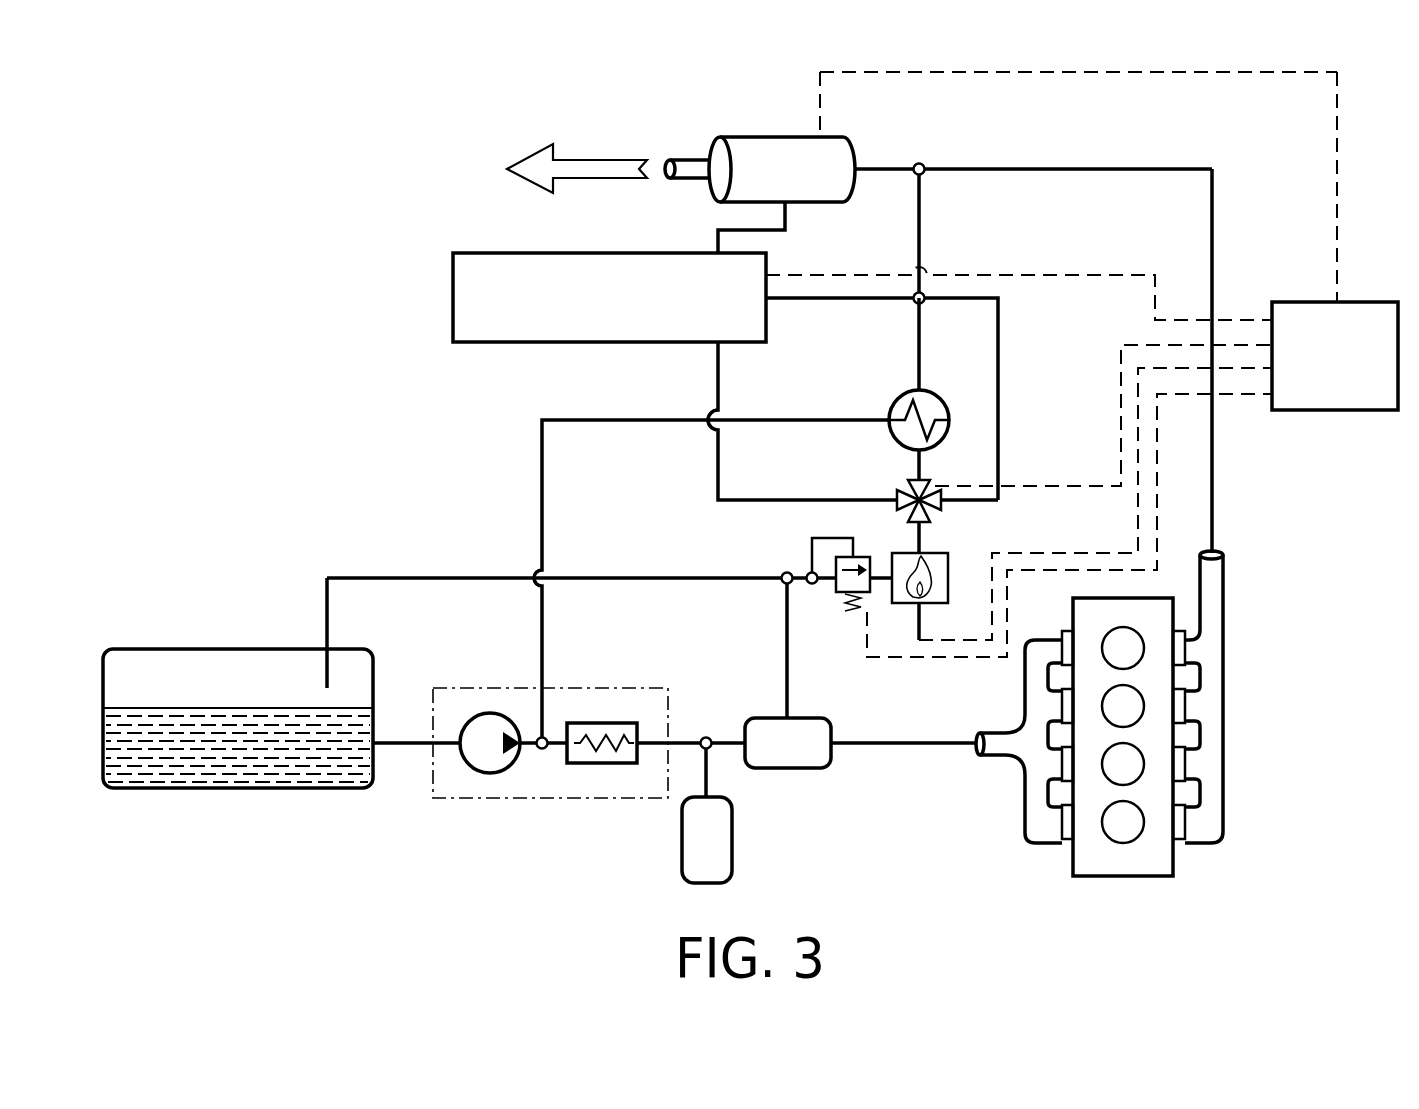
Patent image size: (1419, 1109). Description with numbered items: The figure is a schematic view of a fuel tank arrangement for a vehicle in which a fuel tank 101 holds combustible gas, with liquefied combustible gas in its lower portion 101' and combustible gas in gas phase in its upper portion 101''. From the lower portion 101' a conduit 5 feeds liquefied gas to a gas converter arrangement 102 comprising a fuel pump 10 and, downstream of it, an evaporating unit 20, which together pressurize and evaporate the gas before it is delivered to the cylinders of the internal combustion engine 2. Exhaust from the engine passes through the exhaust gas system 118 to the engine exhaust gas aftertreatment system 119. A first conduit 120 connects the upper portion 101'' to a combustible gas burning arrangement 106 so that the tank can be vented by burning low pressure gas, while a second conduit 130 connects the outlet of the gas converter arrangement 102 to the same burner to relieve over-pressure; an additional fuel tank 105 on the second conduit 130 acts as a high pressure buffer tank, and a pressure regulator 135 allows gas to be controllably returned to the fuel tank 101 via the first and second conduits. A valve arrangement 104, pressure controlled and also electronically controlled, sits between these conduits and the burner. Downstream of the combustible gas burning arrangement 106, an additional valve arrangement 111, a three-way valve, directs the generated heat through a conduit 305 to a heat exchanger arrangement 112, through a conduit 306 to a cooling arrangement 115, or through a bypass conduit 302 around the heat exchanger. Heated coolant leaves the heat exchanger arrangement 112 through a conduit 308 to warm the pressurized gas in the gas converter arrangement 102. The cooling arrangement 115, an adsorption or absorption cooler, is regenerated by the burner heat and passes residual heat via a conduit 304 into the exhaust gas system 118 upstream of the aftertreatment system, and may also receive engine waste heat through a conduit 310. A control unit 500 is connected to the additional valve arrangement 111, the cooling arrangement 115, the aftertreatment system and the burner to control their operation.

The internal combustion engine 2 is at (1125, 876).
The conduit 5 is at (408, 748).
The fuel pump 10 is at (490, 773).
The evaporating unit 20 is at (597, 763).
The fuel tank 101 is at (238, 684).
The lower portion 101' is at (238, 787).
The upper portion 101'' is at (394, 633).
The gas converter arrangement 102 is at (565, 798).
The valve arrangement 104 is at (836, 590).
The additional fuel tank 105 is at (735, 838).
The combustible gas burning arrangement 106 is at (900, 603).
The additional valve arrangement 111 is at (934, 505).
The heat exchanger arrangement 112 is at (950, 430).
The cooling arrangement 115 is at (453, 298).
The exhaust gas system 118 is at (1060, 168).
The engine exhaust gas aftertreatment system 119 is at (778, 137).
The first conduit 120 is at (445, 578).
The second conduit 130 is at (787, 648).
The pressure regulator 135 is at (790, 768).
The conduit 302 is at (998, 340).
The conduit 304 is at (920, 233).
The conduit 305 is at (922, 466).
The conduit 306 is at (826, 500).
The conduit 308 is at (650, 420).
The conduit 310 is at (718, 243).
The control unit 500 is at (1335, 410).